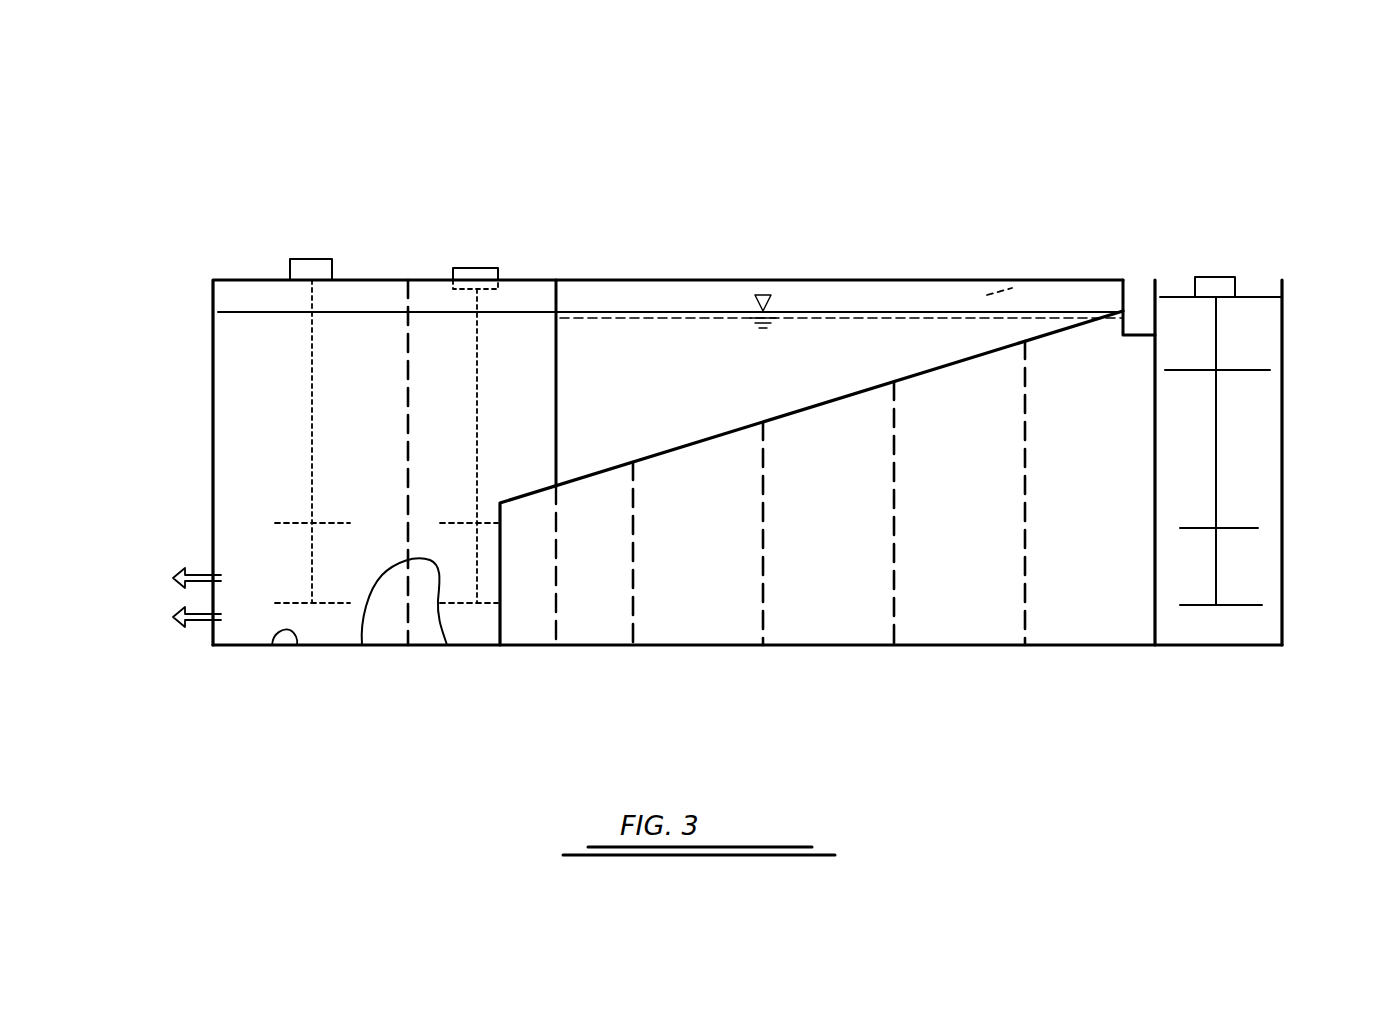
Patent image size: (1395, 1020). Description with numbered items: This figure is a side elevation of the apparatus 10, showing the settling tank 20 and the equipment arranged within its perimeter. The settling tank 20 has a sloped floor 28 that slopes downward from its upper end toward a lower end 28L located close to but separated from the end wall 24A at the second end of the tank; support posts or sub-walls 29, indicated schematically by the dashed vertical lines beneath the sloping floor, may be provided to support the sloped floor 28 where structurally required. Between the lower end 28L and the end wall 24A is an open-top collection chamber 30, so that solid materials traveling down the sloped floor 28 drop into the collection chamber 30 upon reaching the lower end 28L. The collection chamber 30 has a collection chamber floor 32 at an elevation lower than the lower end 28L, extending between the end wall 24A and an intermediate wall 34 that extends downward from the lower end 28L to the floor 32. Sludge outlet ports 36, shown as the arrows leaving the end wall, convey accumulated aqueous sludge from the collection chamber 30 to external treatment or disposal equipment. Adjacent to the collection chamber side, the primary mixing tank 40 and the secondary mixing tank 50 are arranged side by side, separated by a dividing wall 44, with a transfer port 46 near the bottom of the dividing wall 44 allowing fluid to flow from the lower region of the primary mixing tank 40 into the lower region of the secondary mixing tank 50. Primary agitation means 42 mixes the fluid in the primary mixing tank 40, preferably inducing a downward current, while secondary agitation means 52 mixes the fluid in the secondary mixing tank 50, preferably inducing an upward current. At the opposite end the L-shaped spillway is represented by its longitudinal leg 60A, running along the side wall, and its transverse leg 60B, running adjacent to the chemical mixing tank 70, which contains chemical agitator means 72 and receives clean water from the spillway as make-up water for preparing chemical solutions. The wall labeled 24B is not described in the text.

The apparatus 10 is at (1060, 95).
The settling tank 20 is at (826, 350).
The end wall 24A is at (213, 432).
The second end wall 24B is at (1283, 512).
The sloped floor 28 is at (748, 428).
The lower end 28L is at (494, 496).
The support posts or sub-walls 29 is at (763, 587).
The collection chamber 30 is at (296, 572).
The collection chamber floor 32 is at (272, 645).
The intermediate wall 34 is at (498, 620).
The sludge outlet ports 36 is at (176, 598).
The primary mixing tank 40 is at (240, 358).
The primary agitation means 42 is at (303, 252).
The dividing wall 44 is at (405, 420).
The transfer port 46 is at (412, 620).
The secondary mixing tank 50 is at (515, 300).
The secondary agitation means 52 is at (478, 268).
The longitudinal leg 60A is at (1012, 288).
The transverse leg 60B is at (1137, 292).
The chemical mixing tank 70 is at (1262, 406).
The chemical agitator means 72 is at (1230, 274).